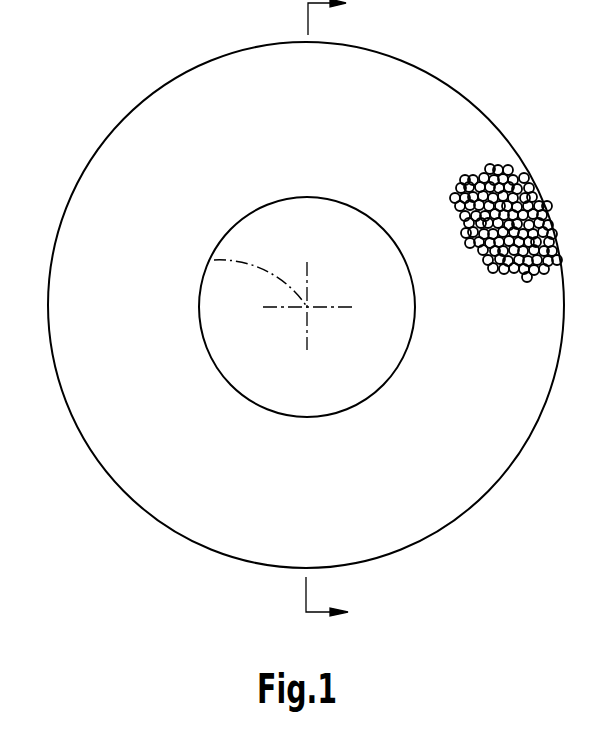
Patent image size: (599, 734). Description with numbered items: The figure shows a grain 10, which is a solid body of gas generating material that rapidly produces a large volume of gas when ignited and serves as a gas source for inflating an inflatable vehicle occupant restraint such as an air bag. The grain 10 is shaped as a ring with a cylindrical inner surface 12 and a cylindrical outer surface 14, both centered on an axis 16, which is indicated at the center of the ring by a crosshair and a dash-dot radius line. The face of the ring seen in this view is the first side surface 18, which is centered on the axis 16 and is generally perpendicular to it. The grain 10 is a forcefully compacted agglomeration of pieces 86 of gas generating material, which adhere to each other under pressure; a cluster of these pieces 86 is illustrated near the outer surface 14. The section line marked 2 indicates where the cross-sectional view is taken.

The grain 10 is at (88, 90).
The inner surface 12 is at (265, 203).
The outer surface 14 is at (220, 57).
The axis 16 is at (206, 260).
The first side surface 18 is at (452, 117).
The pieces of gas generating material 86 is at (541, 195).
The section line 2 is at (335, 313).